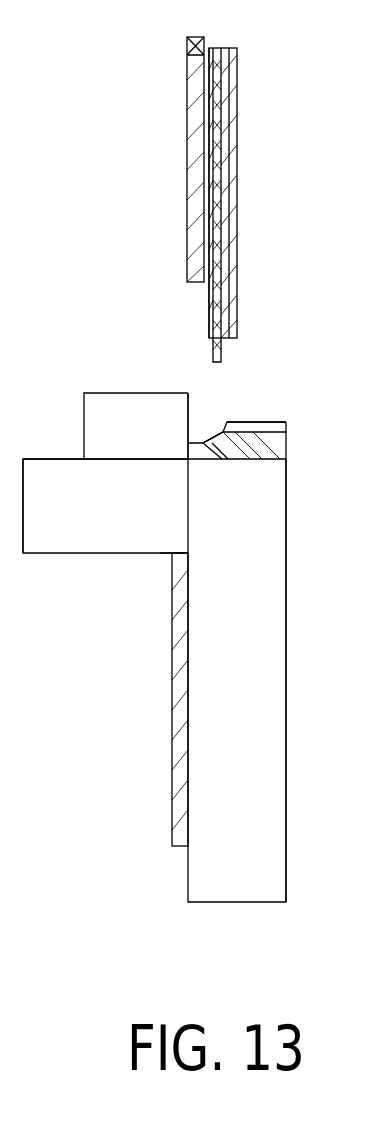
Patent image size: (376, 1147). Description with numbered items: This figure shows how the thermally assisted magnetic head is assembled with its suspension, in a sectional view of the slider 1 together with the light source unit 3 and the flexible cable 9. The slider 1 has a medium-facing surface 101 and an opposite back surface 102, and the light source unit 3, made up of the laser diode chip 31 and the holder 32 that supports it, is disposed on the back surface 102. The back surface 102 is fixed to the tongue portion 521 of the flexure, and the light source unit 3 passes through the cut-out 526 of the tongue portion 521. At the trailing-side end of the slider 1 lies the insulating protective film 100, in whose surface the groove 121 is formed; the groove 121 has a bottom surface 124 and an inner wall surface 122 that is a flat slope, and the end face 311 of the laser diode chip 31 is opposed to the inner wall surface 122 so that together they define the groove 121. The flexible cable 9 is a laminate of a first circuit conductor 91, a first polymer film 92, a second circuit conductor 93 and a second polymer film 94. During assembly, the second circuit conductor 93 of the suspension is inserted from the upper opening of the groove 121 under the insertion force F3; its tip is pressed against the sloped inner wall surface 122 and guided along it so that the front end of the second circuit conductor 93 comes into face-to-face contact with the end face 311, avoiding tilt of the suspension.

The slider 1 is at (222, 880).
The medium-facing surface 101 is at (286, 832).
The back surface 102 is at (187, 654).
The insulating protective film 100 is at (283, 421).
The groove 121 is at (235, 389).
The inner wall surface 122 is at (218, 425).
The bottom surface 124 is at (286, 437).
The light source unit 3 is at (47, 560).
The laser diode chip 31 is at (100, 392).
The end face 311 is at (189, 418).
The holder 32 is at (42, 467).
The cut-out 526 is at (181, 555).
The tongue portion 521 is at (187, 115).
The flexible cable 9 is at (252, 52).
The first circuit conductor 91 is at (228, 245).
The first polymer film 92 is at (223, 93).
The second circuit conductor 93 is at (219, 48).
The second polymer film 94 is at (187, 58).
The force F3 is at (215, 408).